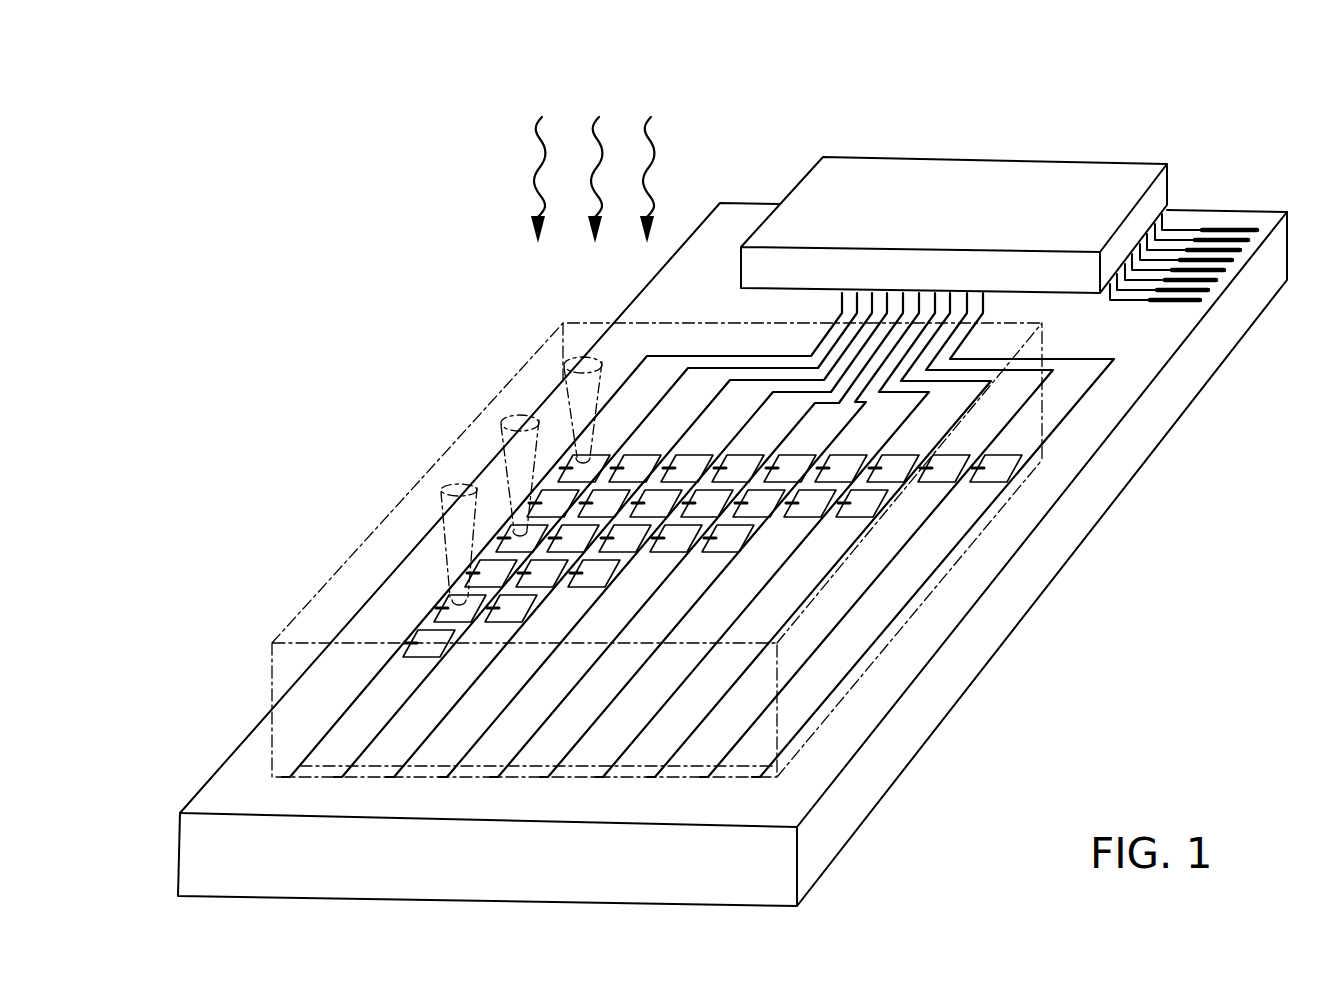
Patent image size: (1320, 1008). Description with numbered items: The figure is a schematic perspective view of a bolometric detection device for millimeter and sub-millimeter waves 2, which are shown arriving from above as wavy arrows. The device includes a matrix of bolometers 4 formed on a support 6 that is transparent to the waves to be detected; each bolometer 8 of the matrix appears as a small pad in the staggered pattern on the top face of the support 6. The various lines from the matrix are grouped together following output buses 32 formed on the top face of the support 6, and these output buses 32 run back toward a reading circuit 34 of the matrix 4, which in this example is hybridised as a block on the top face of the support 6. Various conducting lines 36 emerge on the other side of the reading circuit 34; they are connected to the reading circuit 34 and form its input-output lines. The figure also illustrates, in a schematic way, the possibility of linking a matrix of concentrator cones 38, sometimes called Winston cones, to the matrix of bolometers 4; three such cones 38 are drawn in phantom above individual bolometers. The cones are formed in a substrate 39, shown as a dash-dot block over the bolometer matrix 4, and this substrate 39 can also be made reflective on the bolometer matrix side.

The millimeter and sub-millimeter waves 2 is at (648, 122).
The matrix of bolometers 4 is at (970, 516).
The support 6 is at (930, 650).
The bolometer 8 is at (700, 490).
The output buses 32 is at (757, 390).
The reading circuit 34 is at (960, 165).
The conducting lines 36 is at (1173, 259).
The concentrator cones 38 is at (567, 358).
The substrate 39 is at (368, 548).